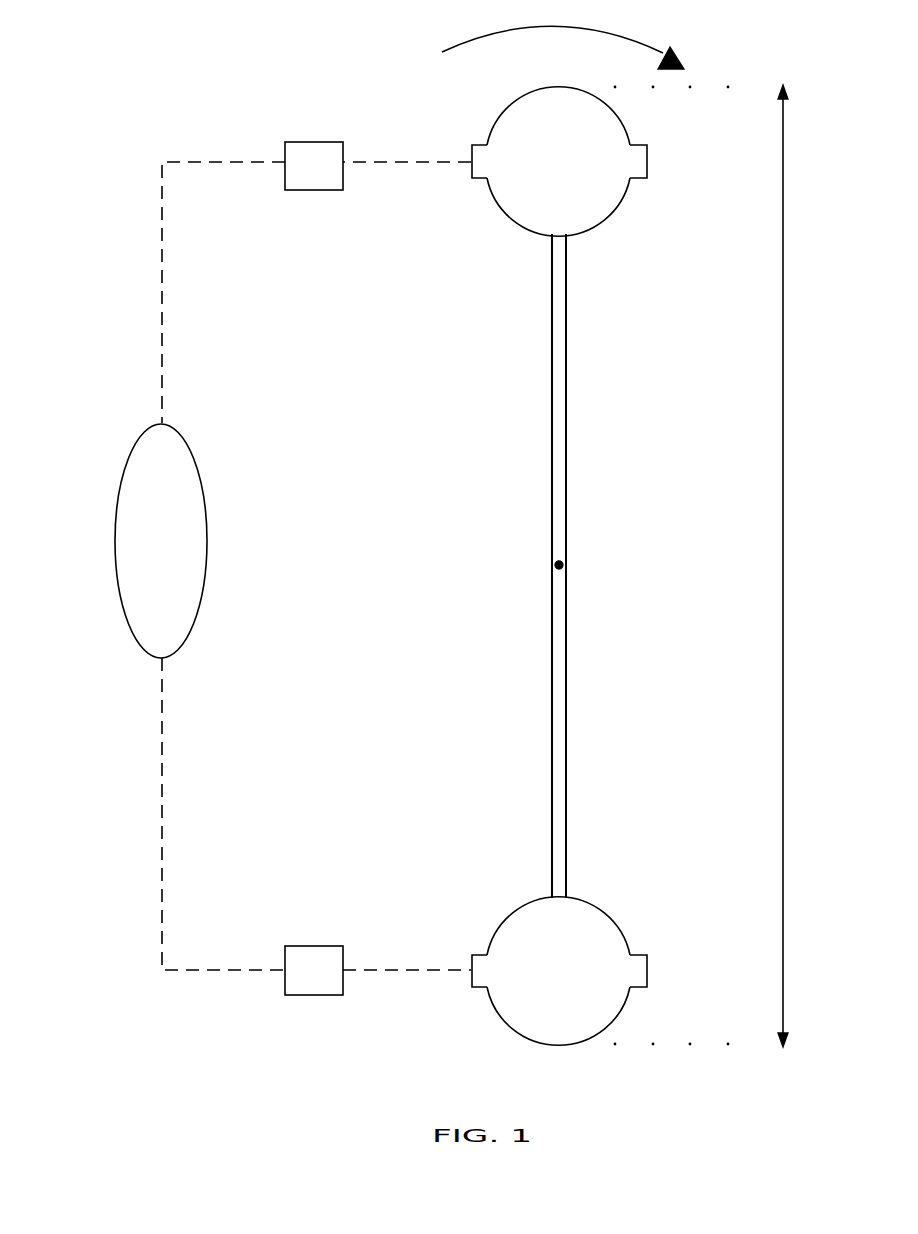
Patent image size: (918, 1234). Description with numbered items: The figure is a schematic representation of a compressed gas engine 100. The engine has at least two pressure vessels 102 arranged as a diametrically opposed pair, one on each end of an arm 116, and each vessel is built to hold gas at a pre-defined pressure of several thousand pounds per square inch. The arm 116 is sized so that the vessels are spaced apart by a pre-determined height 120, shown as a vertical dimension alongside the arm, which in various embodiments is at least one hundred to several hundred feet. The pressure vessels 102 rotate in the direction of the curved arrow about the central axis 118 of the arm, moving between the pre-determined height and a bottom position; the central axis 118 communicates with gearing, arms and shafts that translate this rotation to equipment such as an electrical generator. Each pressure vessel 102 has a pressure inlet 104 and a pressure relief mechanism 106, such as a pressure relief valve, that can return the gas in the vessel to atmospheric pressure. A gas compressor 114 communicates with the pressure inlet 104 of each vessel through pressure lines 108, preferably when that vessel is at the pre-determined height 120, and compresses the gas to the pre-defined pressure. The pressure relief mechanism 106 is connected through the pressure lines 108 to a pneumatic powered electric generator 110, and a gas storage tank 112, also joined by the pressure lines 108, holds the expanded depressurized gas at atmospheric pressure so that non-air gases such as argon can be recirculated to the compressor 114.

The compressed gas engine 100 is at (84, 82).
The pressure vessel 102 is at (507, 127).
The pressure inlet 104 is at (472, 170).
The pressure relief mechanism 106 is at (648, 162).
The pressure lines 108 is at (163, 815).
The pneumatic powered electric generator 110 is at (308, 960).
The gas storage tank 112 is at (191, 538).
The gas compressor 114 is at (308, 178).
The arm 116 is at (563, 385).
The central axis 118 is at (563, 565).
The pre-determined height 120 is at (784, 565).